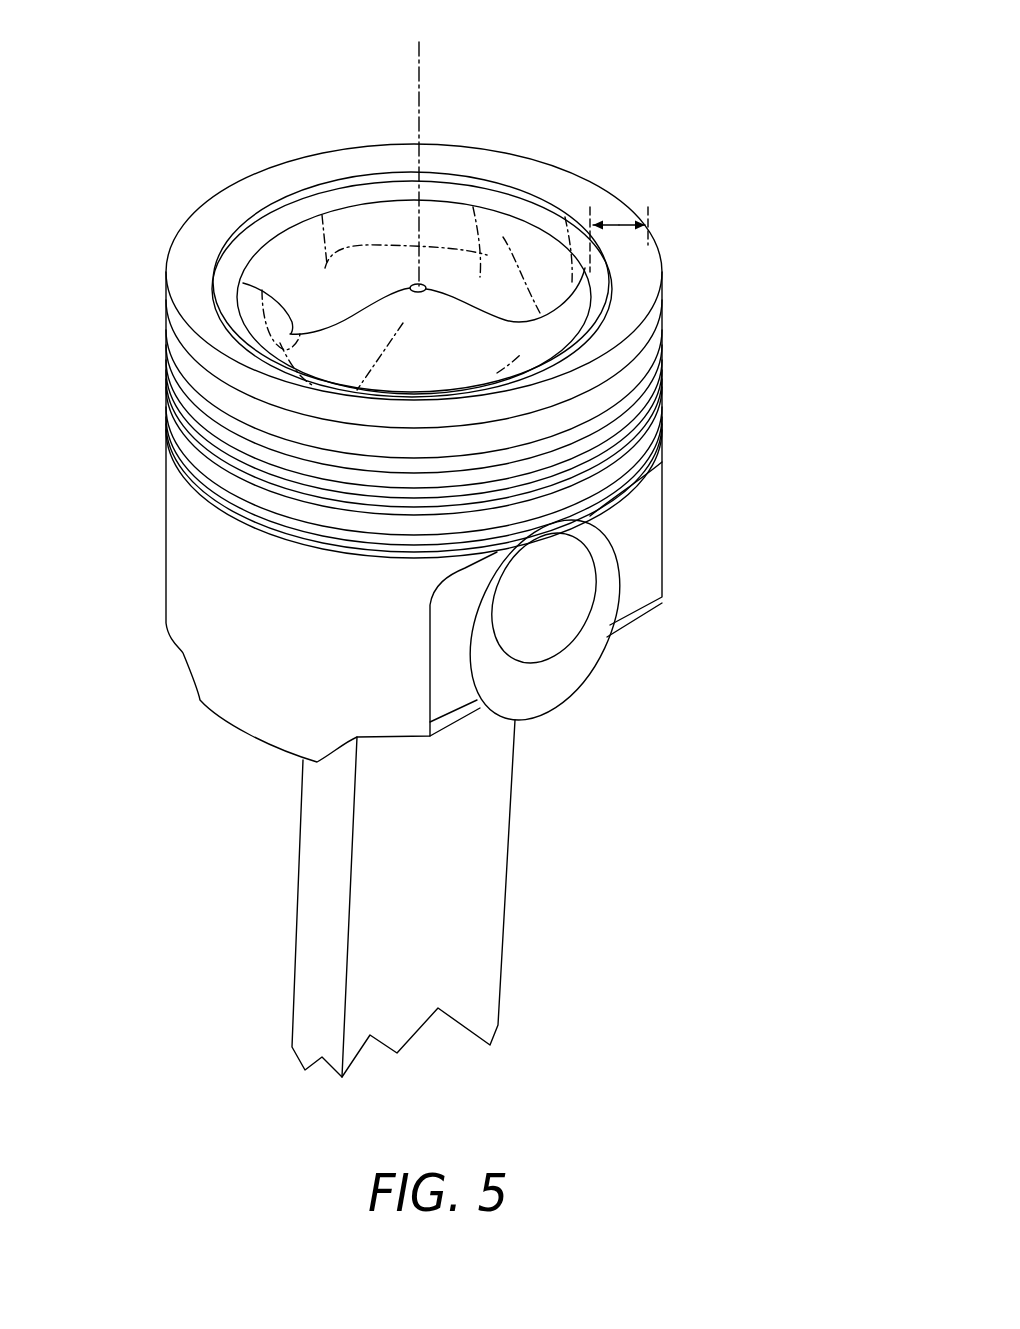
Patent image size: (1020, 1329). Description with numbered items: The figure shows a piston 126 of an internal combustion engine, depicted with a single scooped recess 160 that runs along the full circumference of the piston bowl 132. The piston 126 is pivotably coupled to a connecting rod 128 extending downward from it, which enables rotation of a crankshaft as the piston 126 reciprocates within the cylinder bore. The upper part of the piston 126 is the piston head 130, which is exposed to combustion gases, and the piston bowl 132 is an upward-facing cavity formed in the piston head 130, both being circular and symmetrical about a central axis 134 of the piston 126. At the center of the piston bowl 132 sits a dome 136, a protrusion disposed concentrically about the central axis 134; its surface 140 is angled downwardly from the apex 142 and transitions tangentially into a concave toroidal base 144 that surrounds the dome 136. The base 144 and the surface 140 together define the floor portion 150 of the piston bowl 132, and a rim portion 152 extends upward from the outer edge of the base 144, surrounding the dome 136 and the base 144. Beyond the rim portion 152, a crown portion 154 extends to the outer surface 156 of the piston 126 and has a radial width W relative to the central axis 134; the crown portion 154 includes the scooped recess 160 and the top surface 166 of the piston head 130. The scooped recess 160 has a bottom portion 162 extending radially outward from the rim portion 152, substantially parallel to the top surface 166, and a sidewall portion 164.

The piston 126 is at (753, 174).
The connecting rod 128 is at (473, 920).
The piston head 130 is at (200, 378).
The piston bowl 132 is at (575, 352).
The central axis 134 is at (421, 50).
The dome 136 is at (437, 277).
The surface 140 is at (373, 297).
The apex 142 is at (413, 284).
The base 144 is at (243, 283).
The floor portion 150 is at (476, 292).
The rim portion 152 is at (273, 268).
The crown portion 154 is at (638, 294).
The outer surface 156 is at (580, 403).
The scooped recess 160 is at (332, 199).
The bottom portion 162 is at (605, 270).
The sidewall portion 164 is at (505, 294).
The top surface 166 is at (537, 178).
The width W is at (622, 214).